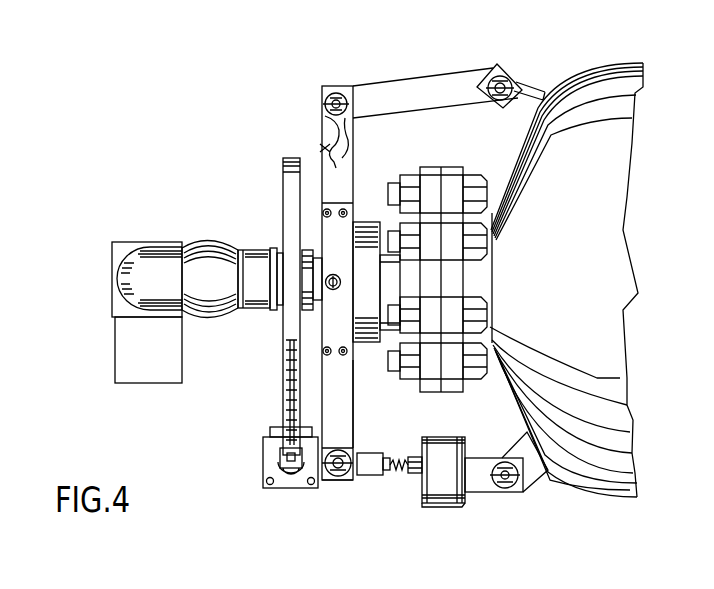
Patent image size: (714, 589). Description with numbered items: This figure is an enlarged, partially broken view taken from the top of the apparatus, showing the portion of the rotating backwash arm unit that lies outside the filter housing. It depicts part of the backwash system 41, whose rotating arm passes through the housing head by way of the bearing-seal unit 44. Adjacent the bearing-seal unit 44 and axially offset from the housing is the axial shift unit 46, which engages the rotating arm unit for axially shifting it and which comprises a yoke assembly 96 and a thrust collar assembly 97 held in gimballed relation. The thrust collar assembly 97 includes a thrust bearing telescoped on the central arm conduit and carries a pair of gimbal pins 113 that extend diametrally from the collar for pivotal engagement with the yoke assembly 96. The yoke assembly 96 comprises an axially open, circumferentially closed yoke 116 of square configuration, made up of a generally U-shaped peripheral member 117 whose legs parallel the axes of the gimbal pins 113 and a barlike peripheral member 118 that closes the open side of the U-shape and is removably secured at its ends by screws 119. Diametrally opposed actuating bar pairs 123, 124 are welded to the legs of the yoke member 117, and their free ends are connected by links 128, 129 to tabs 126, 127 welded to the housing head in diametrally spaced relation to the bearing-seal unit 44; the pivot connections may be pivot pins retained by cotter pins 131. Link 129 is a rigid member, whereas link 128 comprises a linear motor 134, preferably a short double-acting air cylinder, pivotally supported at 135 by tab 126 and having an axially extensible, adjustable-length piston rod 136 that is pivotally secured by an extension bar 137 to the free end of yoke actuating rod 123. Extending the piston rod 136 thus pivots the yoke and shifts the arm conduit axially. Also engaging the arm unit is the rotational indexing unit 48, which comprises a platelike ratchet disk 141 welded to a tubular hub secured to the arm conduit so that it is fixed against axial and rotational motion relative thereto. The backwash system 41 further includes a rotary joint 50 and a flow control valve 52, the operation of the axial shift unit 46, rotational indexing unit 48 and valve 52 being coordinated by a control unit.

The backwash system 41 is at (411, 491).
The bearing-seal unit 44 is at (450, 154).
The axial shift unit 46 is at (346, 490).
The rotational indexing unit 48 is at (256, 459).
The rotary joint 50 is at (197, 230).
The flow control valve 52 is at (106, 345).
The yoke assembly 96 is at (316, 206).
The thrust collar assembly 97 is at (366, 205).
The gimbal pins 113 is at (326, 276).
The yoke 116 is at (306, 323).
The U-shaped peripheral member 117 is at (332, 366).
The barlike peripheral member 118 is at (316, 333).
The screws 119 is at (327, 356).
The actuating bar pair 123 is at (343, 400).
The actuating bar pair 124 is at (327, 150).
The tab 126 is at (548, 480).
The tab 127 is at (506, 92).
The link 128 is at (466, 510).
The link 129 is at (425, 90).
The cotter pins 131 is at (318, 84).
The linear motor 134 is at (433, 494).
The pivotal support 135 is at (478, 487).
The piston rod 136 is at (400, 478).
The extension bar 137 is at (367, 472).
The ratchet disk 141 is at (287, 170).